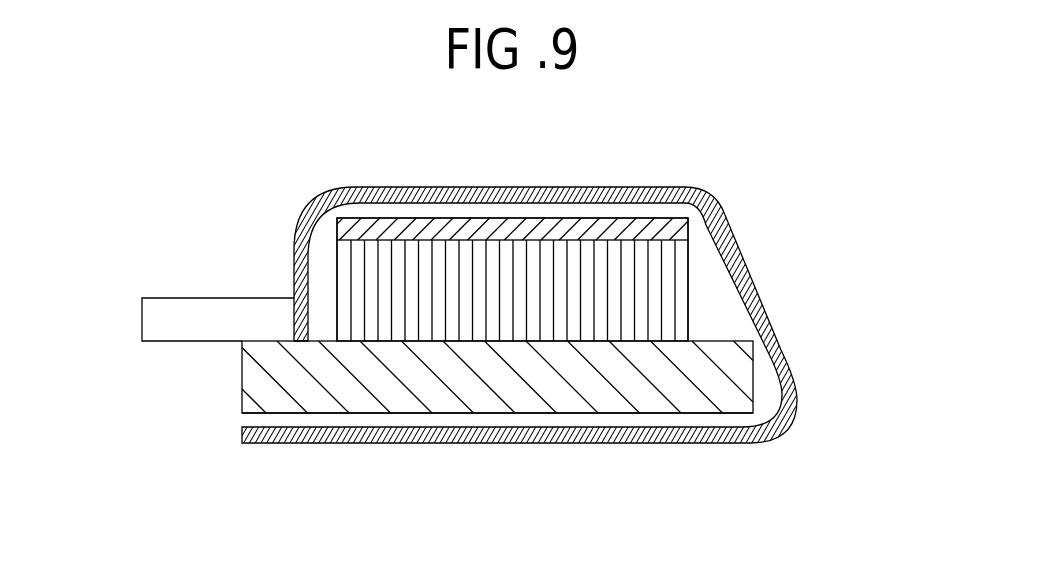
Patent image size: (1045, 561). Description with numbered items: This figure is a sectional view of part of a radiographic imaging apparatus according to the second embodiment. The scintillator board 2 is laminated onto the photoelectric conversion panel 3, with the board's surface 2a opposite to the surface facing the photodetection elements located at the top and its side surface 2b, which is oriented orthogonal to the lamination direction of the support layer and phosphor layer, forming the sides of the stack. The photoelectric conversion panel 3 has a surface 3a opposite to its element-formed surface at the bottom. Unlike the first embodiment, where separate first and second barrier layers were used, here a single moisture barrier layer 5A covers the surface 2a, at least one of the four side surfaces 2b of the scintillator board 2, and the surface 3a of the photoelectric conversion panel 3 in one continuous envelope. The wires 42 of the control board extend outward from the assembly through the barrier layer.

The scintillator board 2 is at (645, 209).
The surface of the scintillator board 2a is at (565, 220).
The side surface of the scintillator board 2b is at (335, 278).
The photoelectric conversion panel 3 is at (762, 376).
The surface of the photoelectric conversion panel 3a is at (500, 413).
The moisture barrier layer 5A is at (455, 190).
The wires 42 is at (177, 298).